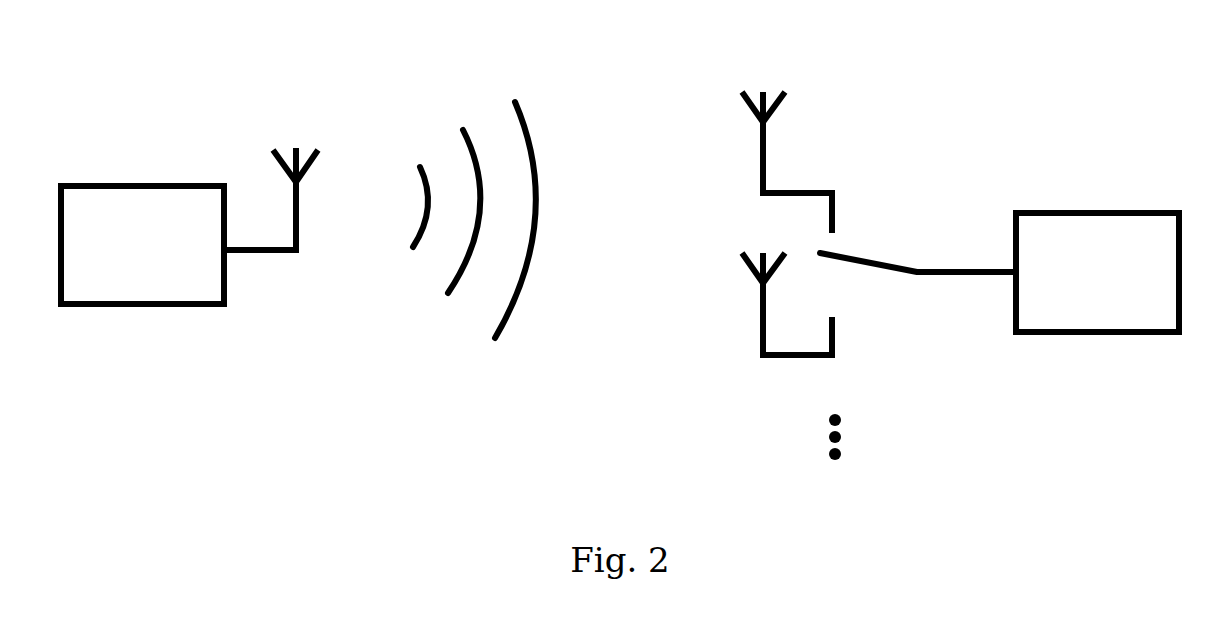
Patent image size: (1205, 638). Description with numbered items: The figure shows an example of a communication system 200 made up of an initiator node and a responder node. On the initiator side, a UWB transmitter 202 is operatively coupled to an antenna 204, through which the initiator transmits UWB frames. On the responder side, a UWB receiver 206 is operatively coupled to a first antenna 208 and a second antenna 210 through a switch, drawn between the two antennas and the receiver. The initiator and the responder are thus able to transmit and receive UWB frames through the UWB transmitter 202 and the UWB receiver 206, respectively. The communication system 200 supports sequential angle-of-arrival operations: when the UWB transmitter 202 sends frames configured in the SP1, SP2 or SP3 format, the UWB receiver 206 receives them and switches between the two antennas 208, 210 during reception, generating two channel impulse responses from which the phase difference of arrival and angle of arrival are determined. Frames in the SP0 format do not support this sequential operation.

The communication system 200 is at (198, 62).
The UWB transmitter 202 is at (157, 183).
The antenna 204 is at (299, 223).
The UWB receiver 206 is at (1062, 210).
The first antenna 208 is at (758, 140).
The second antenna 210 is at (758, 315).